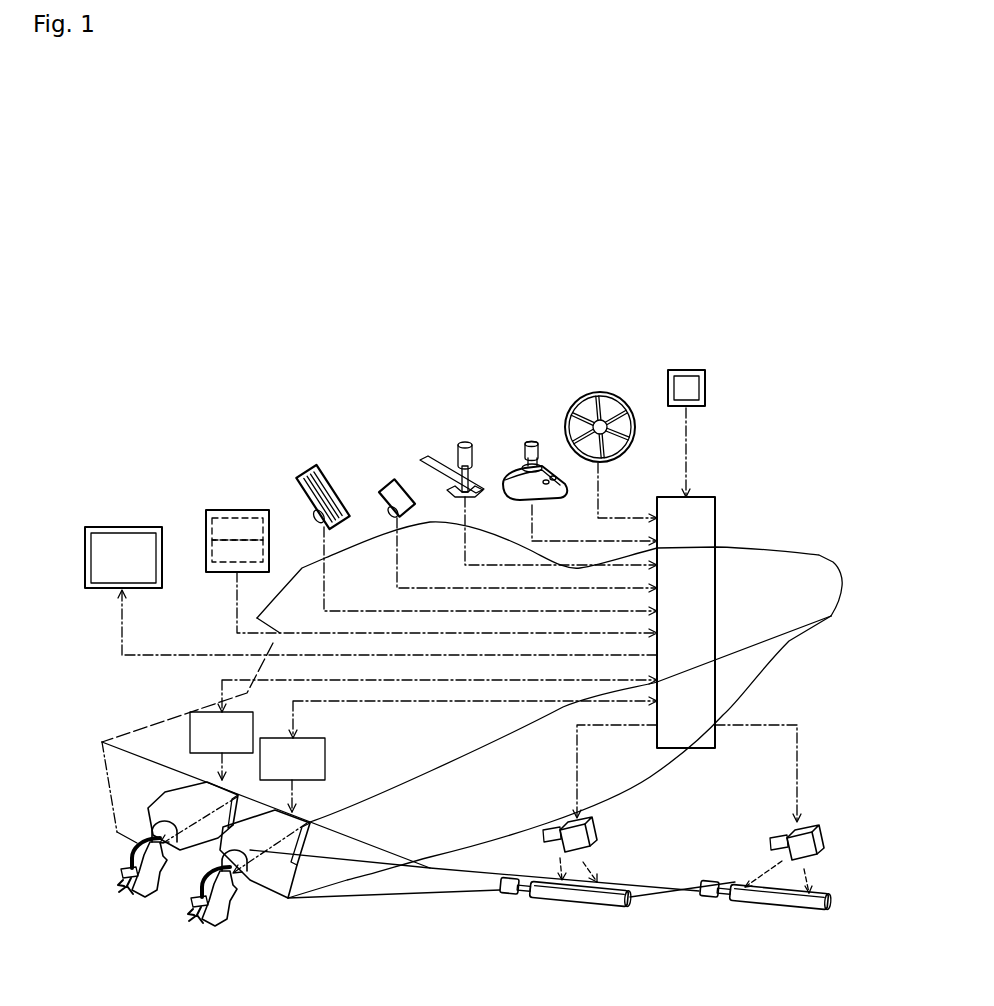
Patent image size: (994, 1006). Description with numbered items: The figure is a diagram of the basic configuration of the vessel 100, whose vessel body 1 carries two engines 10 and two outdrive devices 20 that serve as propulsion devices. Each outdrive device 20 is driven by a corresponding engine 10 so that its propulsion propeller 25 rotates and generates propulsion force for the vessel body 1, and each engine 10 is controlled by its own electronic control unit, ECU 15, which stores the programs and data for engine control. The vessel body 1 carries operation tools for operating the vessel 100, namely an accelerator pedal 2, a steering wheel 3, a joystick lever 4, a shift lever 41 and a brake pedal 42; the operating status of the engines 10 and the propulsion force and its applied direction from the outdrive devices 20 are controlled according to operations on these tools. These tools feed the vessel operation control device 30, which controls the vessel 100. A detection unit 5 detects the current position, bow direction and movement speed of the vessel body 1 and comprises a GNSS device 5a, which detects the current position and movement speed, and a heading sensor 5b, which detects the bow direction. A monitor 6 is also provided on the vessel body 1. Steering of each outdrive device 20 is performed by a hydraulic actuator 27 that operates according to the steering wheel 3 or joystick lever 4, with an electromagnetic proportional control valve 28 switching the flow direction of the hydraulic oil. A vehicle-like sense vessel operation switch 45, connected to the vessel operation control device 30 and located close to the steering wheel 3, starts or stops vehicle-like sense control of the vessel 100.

The vessel 100 is at (160, 310).
The vessel body 1 is at (771, 550).
The accelerator pedal 2 is at (388, 482).
The steering wheel 3 is at (596, 394).
The joystick lever 4 is at (530, 442).
The detection unit 5 is at (411, 548).
The GNSS device 5a is at (214, 518).
The heading sensor 5b is at (214, 555).
The monitor 6 is at (121, 527).
The engine 10 is at (163, 800).
The electronic control unit (ECU) 15 is at (190, 730).
The outdrive device 20 is at (148, 893).
The propulsion propeller 25 is at (123, 892).
The hydraulic actuator 27 is at (558, 905).
The electromagnetic proportional control valve 28 is at (545, 835).
The vessel operation control device 30 is at (677, 628).
The shift lever 41 is at (460, 444).
The brake pedal 42 is at (310, 470).
The vehicle-like sense vessel operation switch 45 is at (706, 383).